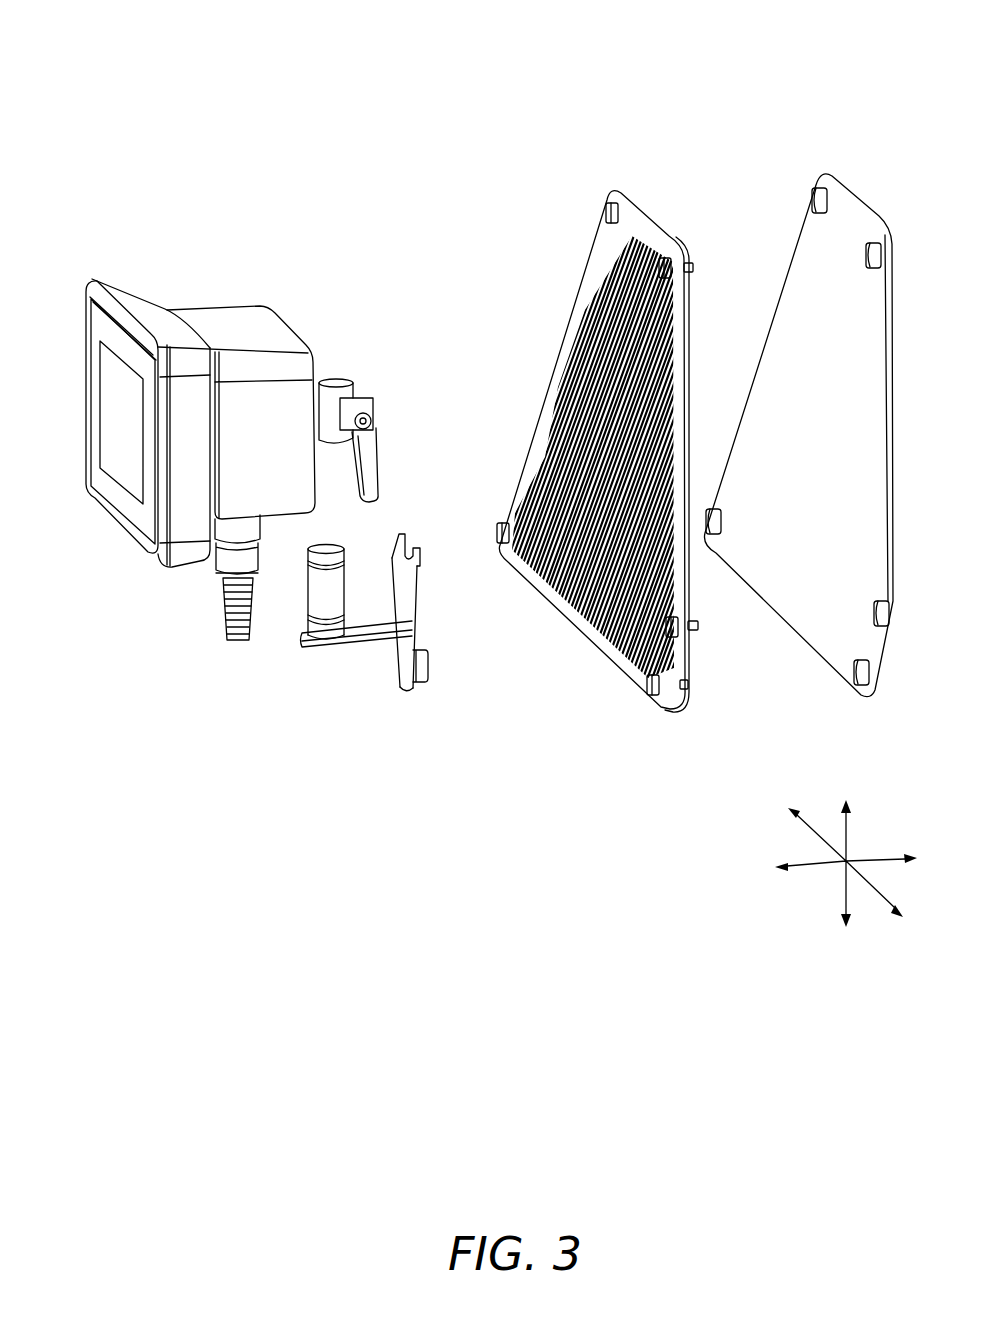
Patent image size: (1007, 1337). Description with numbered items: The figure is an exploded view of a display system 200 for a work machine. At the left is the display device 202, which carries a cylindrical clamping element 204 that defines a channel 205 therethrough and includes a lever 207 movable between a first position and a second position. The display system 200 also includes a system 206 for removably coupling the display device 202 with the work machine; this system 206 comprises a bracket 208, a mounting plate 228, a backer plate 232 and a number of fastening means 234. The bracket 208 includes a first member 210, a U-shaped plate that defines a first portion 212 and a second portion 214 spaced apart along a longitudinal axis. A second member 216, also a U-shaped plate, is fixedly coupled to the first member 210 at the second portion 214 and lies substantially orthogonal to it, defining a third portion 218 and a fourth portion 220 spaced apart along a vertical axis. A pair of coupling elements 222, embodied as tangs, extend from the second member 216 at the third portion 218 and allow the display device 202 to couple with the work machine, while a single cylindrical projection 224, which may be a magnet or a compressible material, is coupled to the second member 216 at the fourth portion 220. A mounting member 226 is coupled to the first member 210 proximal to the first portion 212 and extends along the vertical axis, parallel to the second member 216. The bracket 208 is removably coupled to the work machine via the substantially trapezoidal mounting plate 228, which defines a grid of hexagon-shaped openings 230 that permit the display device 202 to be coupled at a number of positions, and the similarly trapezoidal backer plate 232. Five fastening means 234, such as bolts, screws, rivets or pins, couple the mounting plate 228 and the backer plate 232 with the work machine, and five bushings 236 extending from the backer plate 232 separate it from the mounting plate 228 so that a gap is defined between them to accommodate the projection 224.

The display system 200 is at (146, 65).
The display device 202 is at (104, 280).
The clamping element 204 is at (433, 277).
The channel 205 is at (326, 372).
The lever 207 is at (365, 448).
The system 206 is at (690, 787).
The bracket 208 is at (430, 727).
The first member 210 is at (352, 650).
The first portion 212 is at (300, 665).
The second portion 214 is at (378, 600).
The second member 216 is at (414, 627).
The third portion 218 is at (437, 589).
The fourth portion 220 is at (436, 697).
The coupling elements 222 is at (420, 549).
The projection 224 is at (428, 664).
The mounting member 226 is at (315, 590).
The mounting plate 228 is at (613, 650).
The openings 230 is at (555, 396).
The backer plate 232 is at (823, 633).
The fastening means 234 is at (660, 266).
The bushings 236 is at (863, 257).